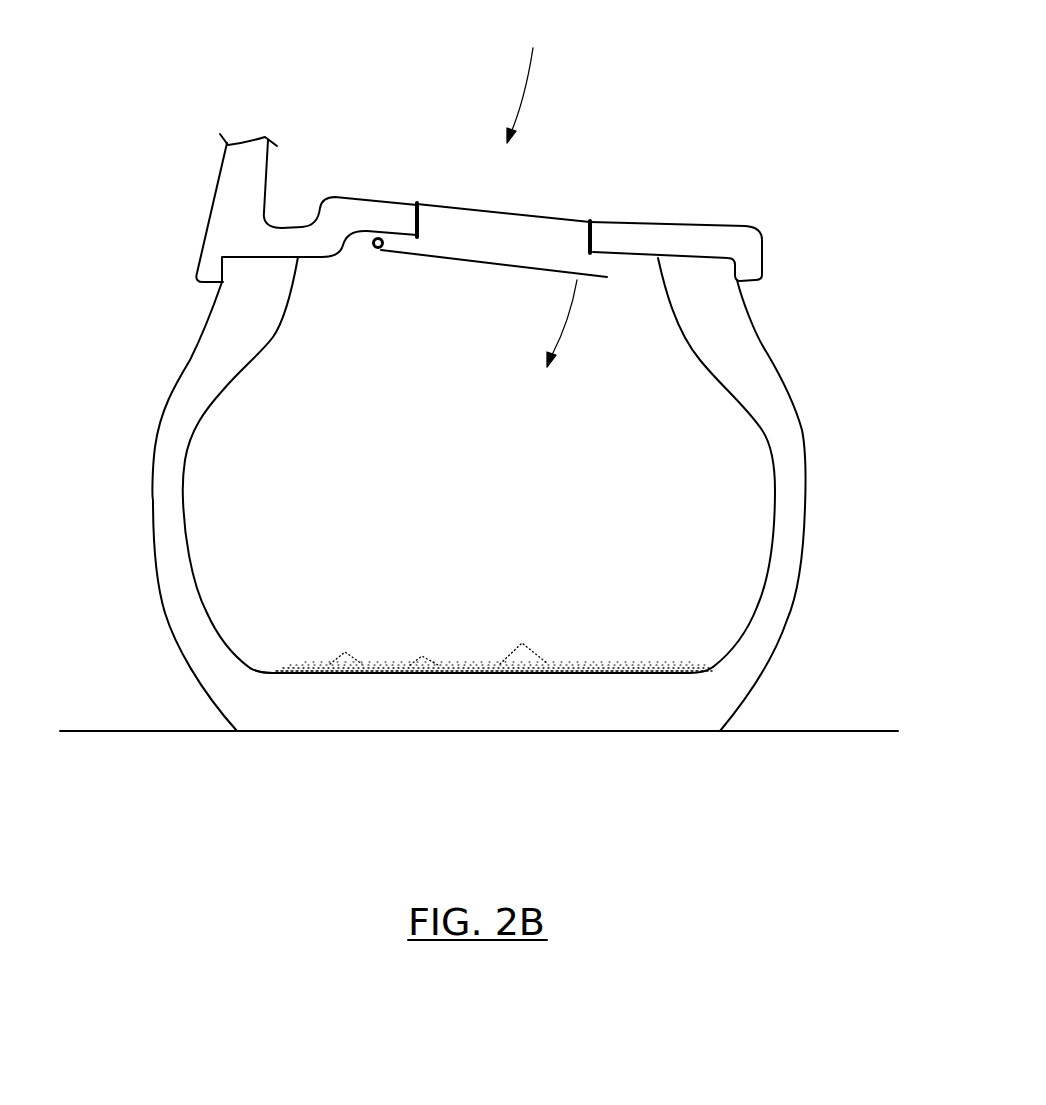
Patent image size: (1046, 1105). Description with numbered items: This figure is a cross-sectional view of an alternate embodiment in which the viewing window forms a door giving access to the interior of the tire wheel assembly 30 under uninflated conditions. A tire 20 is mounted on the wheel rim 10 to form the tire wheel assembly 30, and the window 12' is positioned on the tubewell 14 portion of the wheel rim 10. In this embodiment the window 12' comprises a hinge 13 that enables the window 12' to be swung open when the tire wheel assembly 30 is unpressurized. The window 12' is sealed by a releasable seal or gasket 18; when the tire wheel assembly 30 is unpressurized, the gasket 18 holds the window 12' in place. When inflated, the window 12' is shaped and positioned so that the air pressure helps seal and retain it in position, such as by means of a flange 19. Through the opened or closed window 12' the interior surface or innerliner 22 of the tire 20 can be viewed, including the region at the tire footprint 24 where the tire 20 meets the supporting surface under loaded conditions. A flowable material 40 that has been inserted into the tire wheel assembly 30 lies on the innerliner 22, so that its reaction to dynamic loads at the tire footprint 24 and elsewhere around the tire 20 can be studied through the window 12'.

The wheel rim 10 is at (238, 207).
The window 12' is at (543, 182).
The hinge 13 is at (378, 250).
The tubewell 14 is at (660, 225).
The gasket 18 is at (422, 215).
The flange 19 is at (612, 262).
The tire 20 is at (755, 368).
The innerliner 22 is at (268, 665).
The tire footprint 24 is at (797, 730).
The tire wheel assembly 30 is at (532, 75).
The flowable material 40 is at (533, 652).